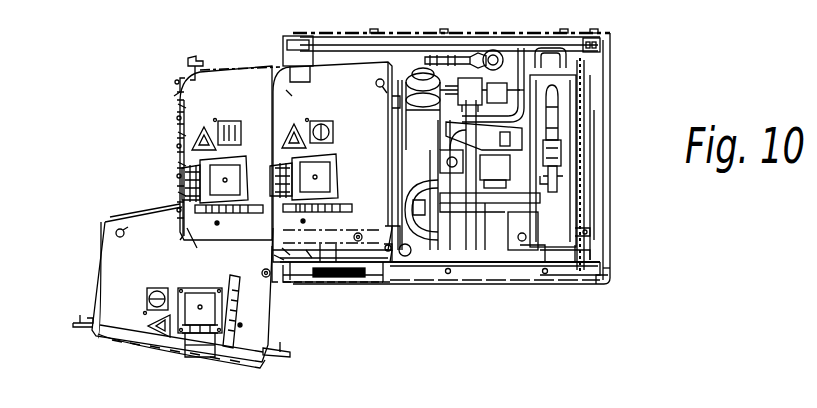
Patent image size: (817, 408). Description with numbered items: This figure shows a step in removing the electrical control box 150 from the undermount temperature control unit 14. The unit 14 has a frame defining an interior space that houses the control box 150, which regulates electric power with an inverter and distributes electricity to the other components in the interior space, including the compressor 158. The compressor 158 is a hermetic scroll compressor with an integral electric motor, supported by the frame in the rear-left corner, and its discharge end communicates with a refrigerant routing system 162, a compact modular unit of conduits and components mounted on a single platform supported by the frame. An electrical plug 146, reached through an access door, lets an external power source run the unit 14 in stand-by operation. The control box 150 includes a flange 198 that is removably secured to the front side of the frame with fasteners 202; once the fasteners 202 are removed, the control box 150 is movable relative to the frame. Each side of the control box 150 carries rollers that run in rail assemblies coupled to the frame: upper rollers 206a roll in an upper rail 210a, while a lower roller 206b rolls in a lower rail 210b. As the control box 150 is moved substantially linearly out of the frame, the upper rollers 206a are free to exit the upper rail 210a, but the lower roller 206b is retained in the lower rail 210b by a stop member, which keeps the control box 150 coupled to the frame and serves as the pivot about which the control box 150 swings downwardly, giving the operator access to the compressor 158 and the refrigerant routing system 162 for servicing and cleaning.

The undermount temperature control unit 14 is at (631, 63).
The electrical plug 146 is at (207, 345).
The electrical control box 150 is at (115, 266).
The compressor 158 is at (568, 98).
The refrigerant routing system 162 is at (476, 38).
The flange 198 is at (191, 68).
The fasteners 202 is at (194, 60).
The upper rollers 206a is at (266, 270).
The lower roller 206b is at (389, 252).
The upper rail 210a is at (322, 258).
The lower rail 210b is at (366, 250).